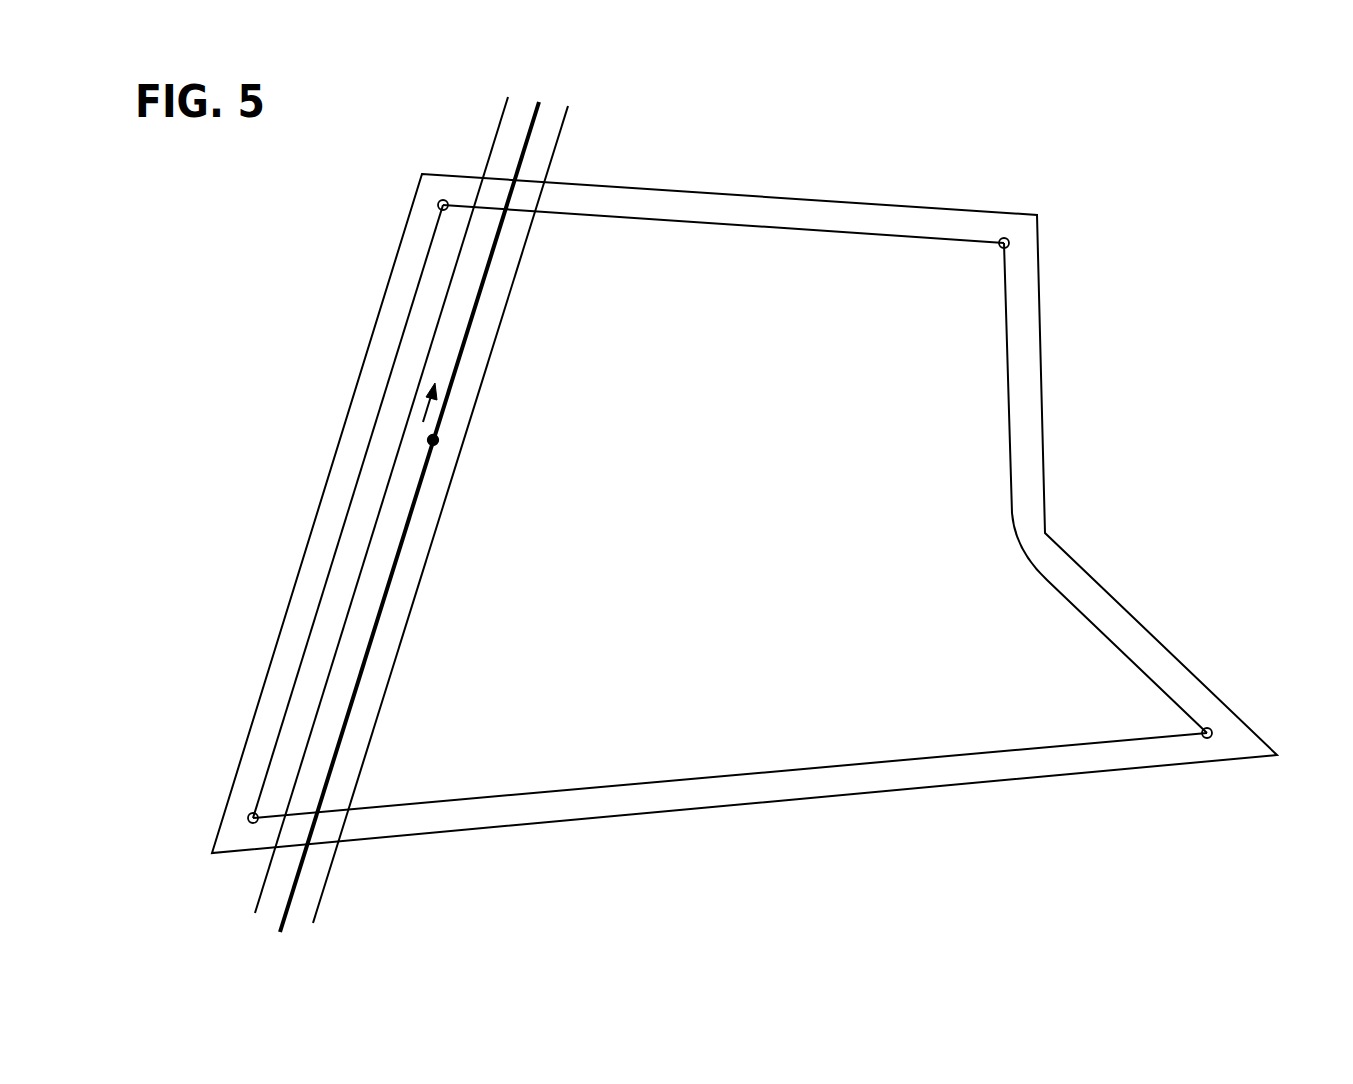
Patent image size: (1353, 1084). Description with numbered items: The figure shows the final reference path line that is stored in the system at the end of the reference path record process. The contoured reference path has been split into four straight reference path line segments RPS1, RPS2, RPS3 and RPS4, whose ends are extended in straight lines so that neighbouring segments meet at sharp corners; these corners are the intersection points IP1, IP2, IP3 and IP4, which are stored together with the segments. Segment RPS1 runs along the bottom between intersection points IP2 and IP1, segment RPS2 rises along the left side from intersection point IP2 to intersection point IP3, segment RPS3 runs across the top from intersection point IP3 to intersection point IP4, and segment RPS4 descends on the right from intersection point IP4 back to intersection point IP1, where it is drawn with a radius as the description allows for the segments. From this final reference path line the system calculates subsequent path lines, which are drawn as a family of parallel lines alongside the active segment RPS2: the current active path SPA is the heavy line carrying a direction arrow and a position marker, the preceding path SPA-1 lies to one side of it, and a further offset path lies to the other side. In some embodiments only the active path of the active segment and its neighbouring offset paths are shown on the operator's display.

The intersection point IP1 is at (1207, 740).
The intersection point IP2 is at (250, 827).
The intersection point IP3 is at (437, 193).
The intersection point IP4 is at (1007, 223).
The reference path line segment RPS1 is at (710, 780).
The reference path line segment RPS2 is at (360, 468).
The reference path line segment RPS3 is at (717, 225).
The reference path line segment RPS4 is at (1010, 398).
The subsequent path line SPA is at (428, 458).
The subsequent path line SPA-1 is at (378, 522).